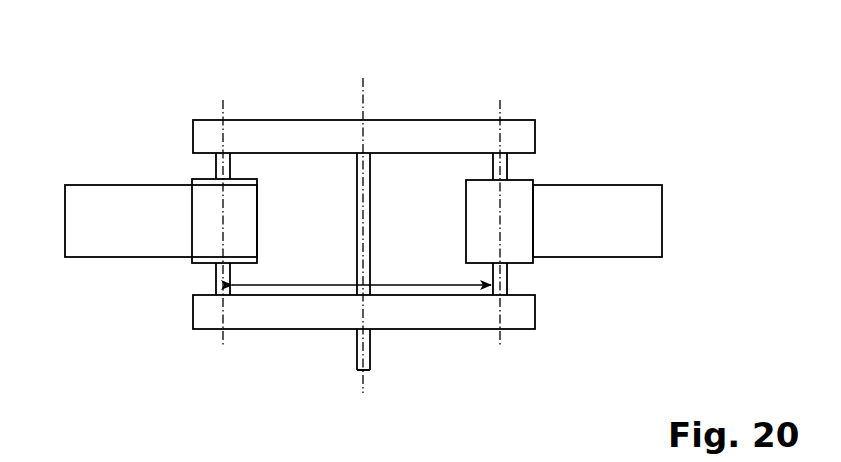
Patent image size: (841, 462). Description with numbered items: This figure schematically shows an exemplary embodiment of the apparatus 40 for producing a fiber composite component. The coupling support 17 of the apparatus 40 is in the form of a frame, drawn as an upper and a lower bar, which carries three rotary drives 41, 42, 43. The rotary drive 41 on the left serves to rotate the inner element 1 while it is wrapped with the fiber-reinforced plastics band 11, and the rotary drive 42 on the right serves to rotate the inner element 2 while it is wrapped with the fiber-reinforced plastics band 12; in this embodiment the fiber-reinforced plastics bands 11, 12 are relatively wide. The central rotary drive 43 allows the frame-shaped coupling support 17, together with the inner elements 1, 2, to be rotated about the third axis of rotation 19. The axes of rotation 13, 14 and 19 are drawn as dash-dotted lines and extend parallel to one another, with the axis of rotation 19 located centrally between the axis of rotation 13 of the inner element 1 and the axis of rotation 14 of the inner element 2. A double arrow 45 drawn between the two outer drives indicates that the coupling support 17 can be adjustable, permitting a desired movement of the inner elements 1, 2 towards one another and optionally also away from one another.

The inner element 1 is at (183, 265).
The inner element 2 is at (536, 266).
The fiber-reinforced plastics band 11 is at (88, 184).
The fiber-reinforced plastics band 12 is at (602, 182).
The axis of rotation 13 is at (220, 338).
The axis of rotation 14 is at (503, 338).
The coupling support 17 is at (256, 118).
The third axis of rotation 19 is at (365, 388).
The apparatus 40 is at (342, 90).
The rotary drive 41 is at (210, 172).
The rotary drive 42 is at (512, 170).
The rotary drive 43 is at (352, 340).
The double arrow 45 is at (410, 285).